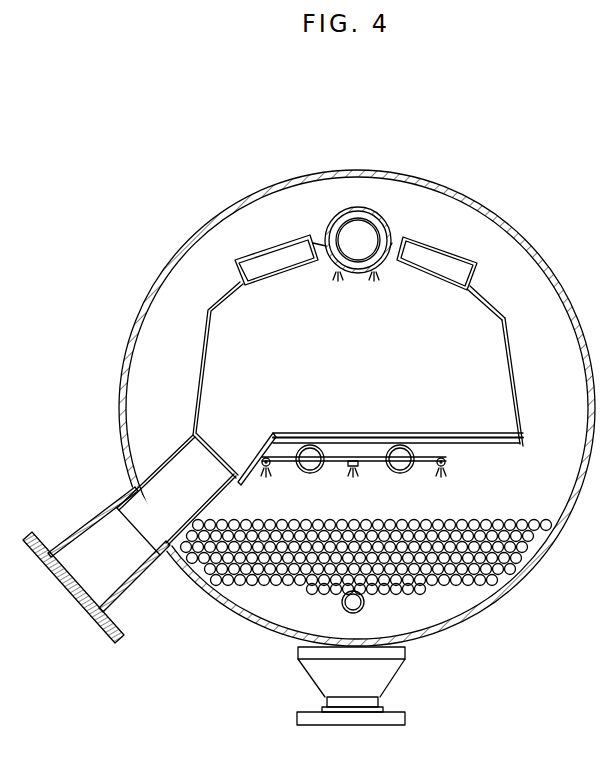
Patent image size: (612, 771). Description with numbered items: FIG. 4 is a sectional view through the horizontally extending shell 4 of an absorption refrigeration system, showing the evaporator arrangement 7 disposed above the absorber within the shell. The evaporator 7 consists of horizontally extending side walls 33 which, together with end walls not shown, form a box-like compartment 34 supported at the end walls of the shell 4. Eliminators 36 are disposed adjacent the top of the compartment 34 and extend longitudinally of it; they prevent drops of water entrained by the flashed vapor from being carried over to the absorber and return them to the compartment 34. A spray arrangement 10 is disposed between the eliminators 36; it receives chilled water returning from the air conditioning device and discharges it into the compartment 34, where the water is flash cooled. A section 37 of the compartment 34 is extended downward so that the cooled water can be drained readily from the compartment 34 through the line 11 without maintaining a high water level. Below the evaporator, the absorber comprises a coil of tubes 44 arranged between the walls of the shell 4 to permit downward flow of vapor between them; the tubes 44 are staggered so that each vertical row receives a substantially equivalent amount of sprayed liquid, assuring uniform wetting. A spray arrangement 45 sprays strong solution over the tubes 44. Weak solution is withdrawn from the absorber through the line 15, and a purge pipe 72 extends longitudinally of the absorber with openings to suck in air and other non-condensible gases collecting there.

The shell 4 is at (543, 271).
The evaporator arrangement 7 is at (479, 291).
The spray arrangement 10 is at (390, 213).
The line 11 is at (134, 585).
The line 15 is at (360, 718).
The side walls 33 is at (516, 340).
The compartment 34 is at (505, 383).
The eliminators 36 is at (418, 249).
The section 37 is at (240, 462).
The tubes 44 is at (500, 578).
The spray arrangement 45 is at (374, 463).
The purge pipe 72 is at (342, 604).